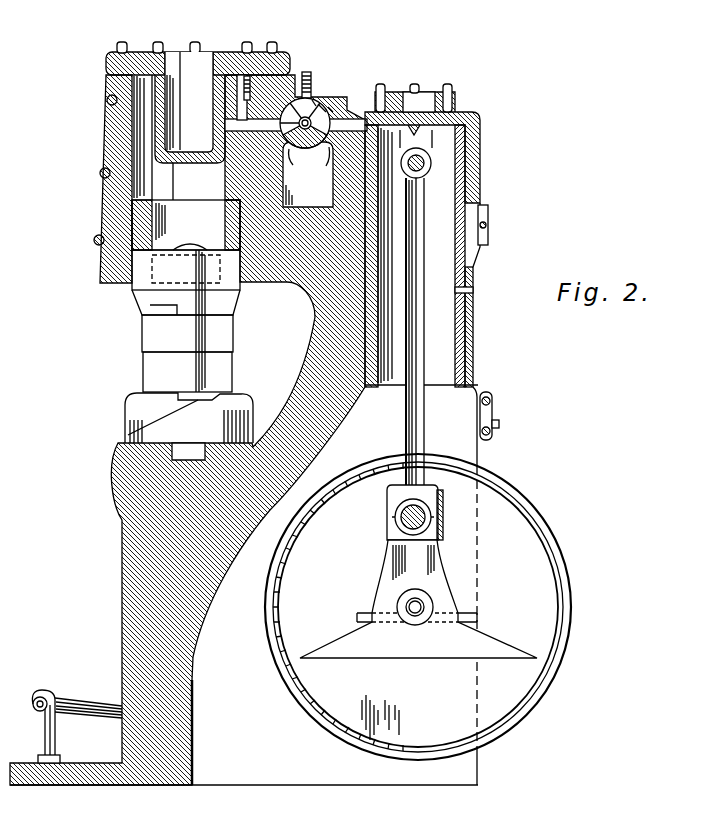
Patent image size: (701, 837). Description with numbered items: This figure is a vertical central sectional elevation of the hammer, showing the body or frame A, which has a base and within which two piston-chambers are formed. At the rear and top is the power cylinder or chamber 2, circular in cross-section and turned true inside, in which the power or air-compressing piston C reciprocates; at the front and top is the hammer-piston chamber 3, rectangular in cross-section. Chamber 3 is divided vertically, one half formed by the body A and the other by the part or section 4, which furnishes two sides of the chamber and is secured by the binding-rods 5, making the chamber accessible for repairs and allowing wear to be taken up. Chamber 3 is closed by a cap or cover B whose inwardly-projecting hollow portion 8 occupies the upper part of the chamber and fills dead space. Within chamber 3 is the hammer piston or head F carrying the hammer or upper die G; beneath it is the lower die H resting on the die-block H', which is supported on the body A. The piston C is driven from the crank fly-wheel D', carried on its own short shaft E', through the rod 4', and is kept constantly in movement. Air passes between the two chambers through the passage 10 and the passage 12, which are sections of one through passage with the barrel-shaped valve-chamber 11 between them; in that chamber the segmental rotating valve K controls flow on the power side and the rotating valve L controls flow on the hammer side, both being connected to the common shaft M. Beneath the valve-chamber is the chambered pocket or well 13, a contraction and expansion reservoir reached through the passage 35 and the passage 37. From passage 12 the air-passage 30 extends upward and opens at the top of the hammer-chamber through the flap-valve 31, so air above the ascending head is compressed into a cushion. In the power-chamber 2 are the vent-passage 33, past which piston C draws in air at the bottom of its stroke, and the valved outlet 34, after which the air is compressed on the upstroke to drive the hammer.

The body or frame A is at (122, 569).
The cap or cover B is at (198, 51).
The power or air compressing piston C is at (452, 167).
The crank fly-wheel D' is at (436, 607).
The short shaft E' is at (418, 574).
The hammer piston or head F is at (131, 286).
The hammer or upper die G is at (141, 327).
The lower die H is at (170, 372).
The die-block H' is at (169, 418).
The rotating valve K is at (322, 110).
The rotating valve L is at (315, 98).
The shaft M is at (330, 107).
The power cylinder or chamber 2 is at (412, 255).
The hammer-piston chamber 3 is at (186, 162).
The part or section 4 is at (107, 179).
The binding-rods 5 is at (100, 167).
The inwardly-projecting hollow portion 8 is at (190, 107).
The passage 10 is at (350, 118).
The valve-chamber 11 is at (310, 118).
The passage 12 is at (304, 70).
The chambered pocket or well 13 is at (308, 176).
The air-passage 30 is at (232, 82).
The flap-valve 31 is at (253, 74).
The vent-passage 33 is at (477, 289).
The valved outlet 34 is at (489, 215).
The passage 35 is at (293, 166).
The passage 37 is at (321, 168).
The rod 4' is at (422, 317).